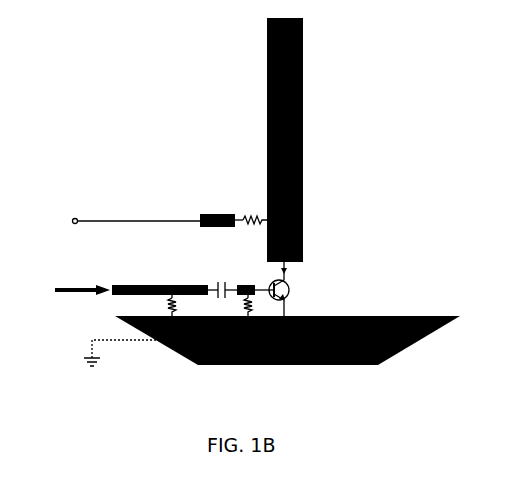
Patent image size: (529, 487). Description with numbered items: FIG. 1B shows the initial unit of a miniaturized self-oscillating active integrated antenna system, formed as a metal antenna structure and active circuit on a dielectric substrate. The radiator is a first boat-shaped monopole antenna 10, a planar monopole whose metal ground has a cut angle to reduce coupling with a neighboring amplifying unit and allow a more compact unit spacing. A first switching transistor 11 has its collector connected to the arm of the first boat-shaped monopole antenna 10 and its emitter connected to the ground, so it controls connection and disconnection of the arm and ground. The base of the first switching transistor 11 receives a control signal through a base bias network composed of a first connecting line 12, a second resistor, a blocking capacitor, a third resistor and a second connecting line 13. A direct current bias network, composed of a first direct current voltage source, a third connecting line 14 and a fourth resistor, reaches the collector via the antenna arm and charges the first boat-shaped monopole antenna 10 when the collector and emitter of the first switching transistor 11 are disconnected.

The first boat-shaped monopole antenna 10 is at (313, 167).
The first switching transistor 11 is at (302, 287).
The first connecting line 12 is at (194, 282).
The second connecting line 13 is at (243, 284).
The third connecting line 14 is at (215, 213).